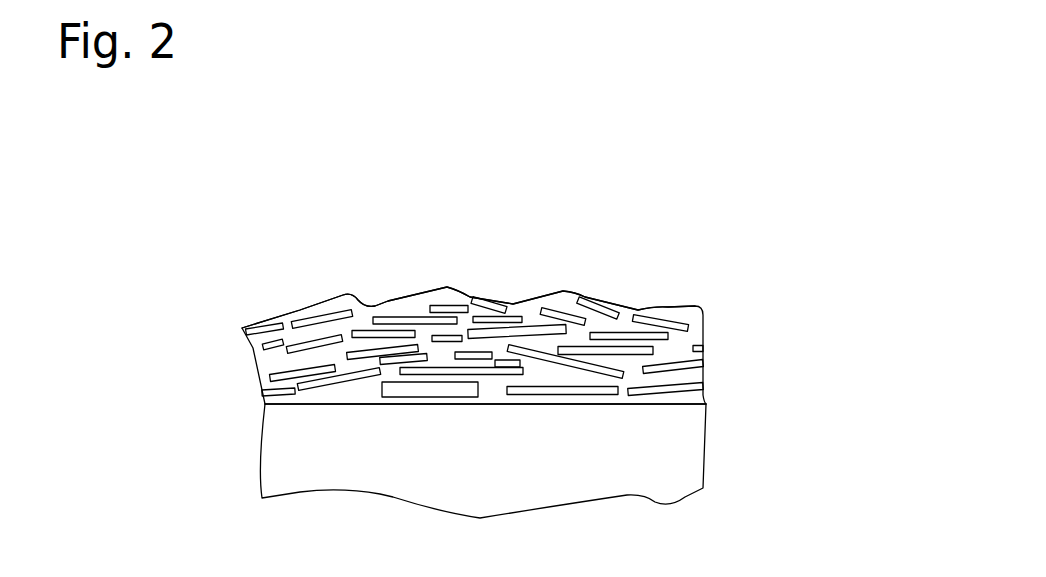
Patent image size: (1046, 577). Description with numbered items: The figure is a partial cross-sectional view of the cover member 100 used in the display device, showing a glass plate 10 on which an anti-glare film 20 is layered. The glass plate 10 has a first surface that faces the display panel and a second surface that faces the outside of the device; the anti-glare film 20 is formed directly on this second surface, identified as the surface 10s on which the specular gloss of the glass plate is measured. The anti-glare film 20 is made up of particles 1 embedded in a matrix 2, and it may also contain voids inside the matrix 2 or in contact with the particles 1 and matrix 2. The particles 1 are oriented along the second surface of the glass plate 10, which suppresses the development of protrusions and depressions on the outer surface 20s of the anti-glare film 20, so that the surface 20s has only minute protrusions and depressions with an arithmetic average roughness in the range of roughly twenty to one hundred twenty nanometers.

The cover member 100 is at (685, 143).
The glass plate 10 is at (690, 456).
The surface of the glass plate 10s is at (705, 390).
The anti-glare film 20 is at (705, 355).
The surface of the anti-glare film 20s is at (640, 308).
The matrix 2 is at (570, 307).
The particles 1 is at (480, 298).